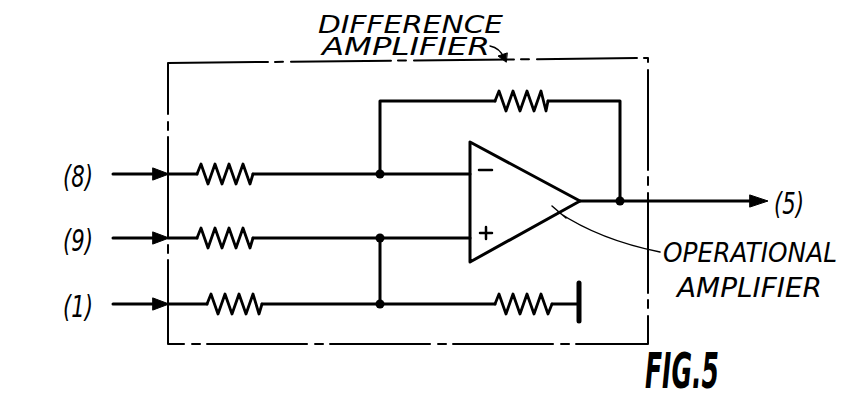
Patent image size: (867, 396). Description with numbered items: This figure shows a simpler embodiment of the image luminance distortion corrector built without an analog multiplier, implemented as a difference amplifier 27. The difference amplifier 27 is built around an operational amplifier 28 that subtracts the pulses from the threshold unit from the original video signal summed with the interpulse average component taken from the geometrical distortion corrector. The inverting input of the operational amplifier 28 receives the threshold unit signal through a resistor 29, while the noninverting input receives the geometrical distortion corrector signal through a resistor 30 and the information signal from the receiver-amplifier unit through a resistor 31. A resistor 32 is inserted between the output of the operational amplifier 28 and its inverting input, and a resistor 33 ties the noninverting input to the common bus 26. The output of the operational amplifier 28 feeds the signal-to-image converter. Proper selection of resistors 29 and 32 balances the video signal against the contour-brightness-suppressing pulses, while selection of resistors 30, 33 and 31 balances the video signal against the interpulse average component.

The common bus 26 is at (584, 299).
The difference amplifier 27 is at (649, 97).
The operational amplifier 28 is at (549, 192).
The resistor 29 is at (227, 164).
The resistor 30 is at (240, 230).
The resistor 31 is at (246, 296).
The resistor 32 is at (530, 112).
The resistor 33 is at (542, 294).